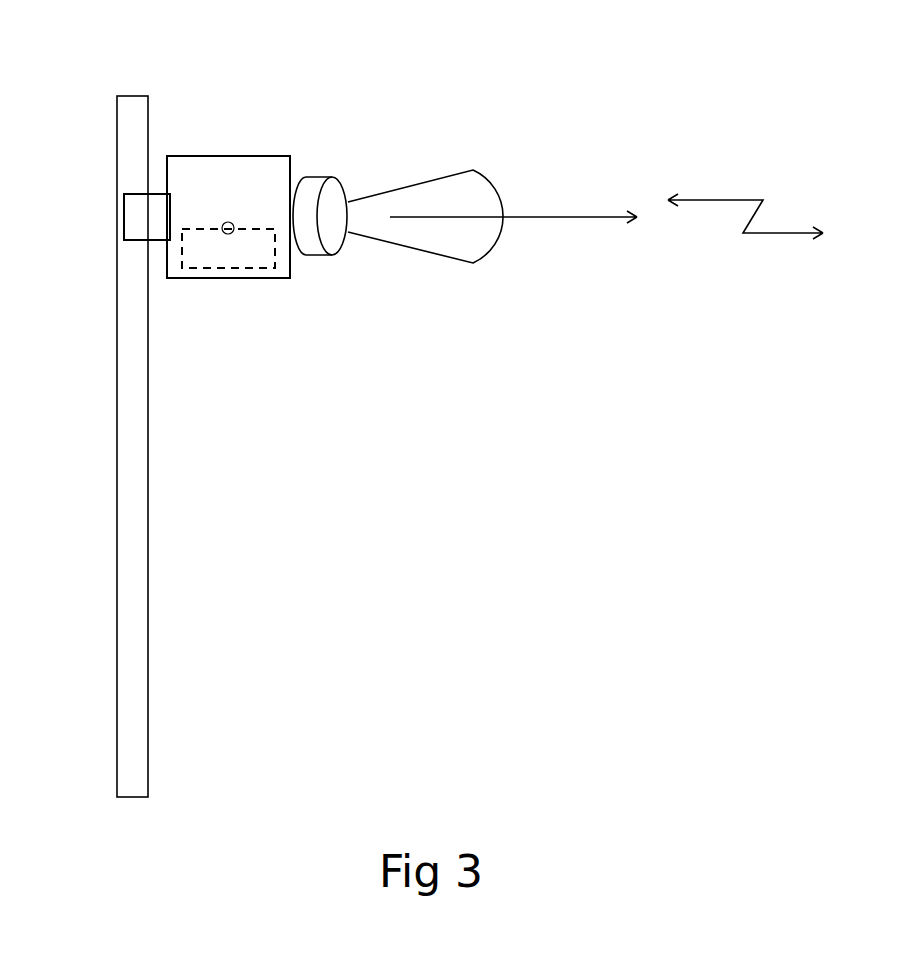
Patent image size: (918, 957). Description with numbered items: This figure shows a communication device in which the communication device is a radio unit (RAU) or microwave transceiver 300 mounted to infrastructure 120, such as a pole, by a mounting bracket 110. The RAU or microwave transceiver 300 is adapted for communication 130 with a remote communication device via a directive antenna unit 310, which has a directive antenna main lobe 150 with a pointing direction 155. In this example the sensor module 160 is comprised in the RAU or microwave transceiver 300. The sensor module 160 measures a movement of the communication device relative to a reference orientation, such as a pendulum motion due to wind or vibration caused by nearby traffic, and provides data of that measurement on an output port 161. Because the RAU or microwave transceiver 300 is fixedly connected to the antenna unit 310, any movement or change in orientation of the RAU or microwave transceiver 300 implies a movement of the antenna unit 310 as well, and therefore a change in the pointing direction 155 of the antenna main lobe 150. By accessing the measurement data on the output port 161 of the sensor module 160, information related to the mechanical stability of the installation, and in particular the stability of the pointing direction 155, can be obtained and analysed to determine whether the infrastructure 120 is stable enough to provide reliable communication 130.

The mounting bracket 110 is at (120, 216).
The infrastructure 120 is at (133, 96).
The communication 130 is at (745, 200).
The directive antenna main lobe 150 is at (499, 136).
The pointing direction 155 is at (513, 204).
The sensor module 160 is at (228, 269).
The output port 161 is at (246, 214).
The radio unit (RAU) or microwave transceiver 300 is at (277, 278).
The directive antenna unit 310 is at (350, 160).